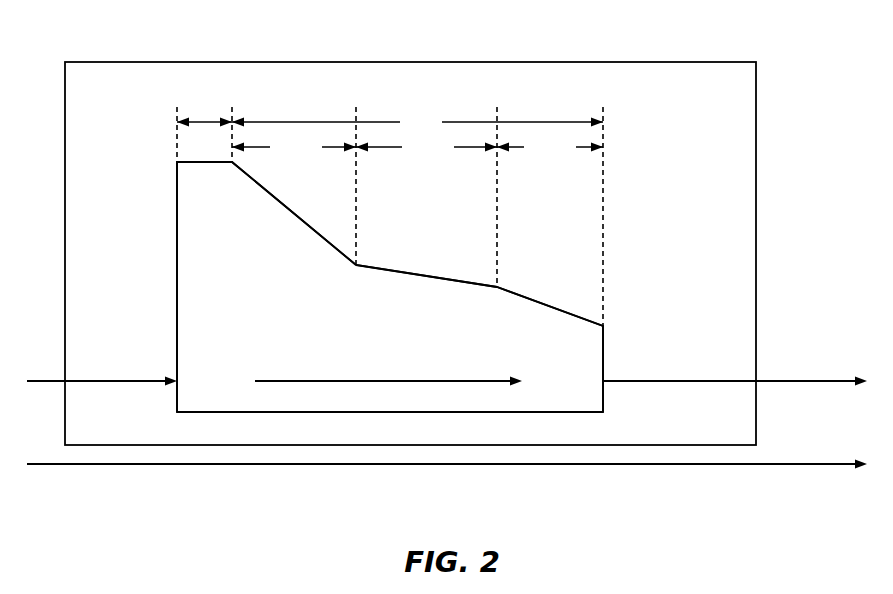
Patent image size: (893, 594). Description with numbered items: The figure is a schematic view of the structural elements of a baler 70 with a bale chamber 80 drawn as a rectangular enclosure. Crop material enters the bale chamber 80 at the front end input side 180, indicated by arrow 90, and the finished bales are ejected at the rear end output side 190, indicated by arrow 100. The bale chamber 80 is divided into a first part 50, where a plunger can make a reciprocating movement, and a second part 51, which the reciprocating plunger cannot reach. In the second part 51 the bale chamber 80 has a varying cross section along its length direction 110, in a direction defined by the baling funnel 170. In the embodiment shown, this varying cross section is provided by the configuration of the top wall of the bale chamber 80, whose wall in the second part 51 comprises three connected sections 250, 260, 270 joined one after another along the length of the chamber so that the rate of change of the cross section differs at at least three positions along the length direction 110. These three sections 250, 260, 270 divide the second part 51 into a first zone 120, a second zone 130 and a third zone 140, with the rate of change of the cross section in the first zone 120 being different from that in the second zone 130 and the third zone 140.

The baler 70 is at (652, 61).
The bale chamber 80 is at (626, 219).
The first part 50 is at (206, 120).
The second part 51 is at (417, 122).
The first zone 120 is at (294, 147).
The second zone 130 is at (426, 147).
The third zone 140 is at (550, 147).
The first section 250 is at (278, 200).
The second section 260 is at (428, 277).
The third section 270 is at (548, 305).
The front end input side 180 is at (175, 400).
The rear end output side 190 is at (605, 398).
The arrow 90 is at (44, 380).
The baling funnel 170 is at (390, 380).
The arrow 100 is at (809, 380).
The length direction 110 is at (397, 466).